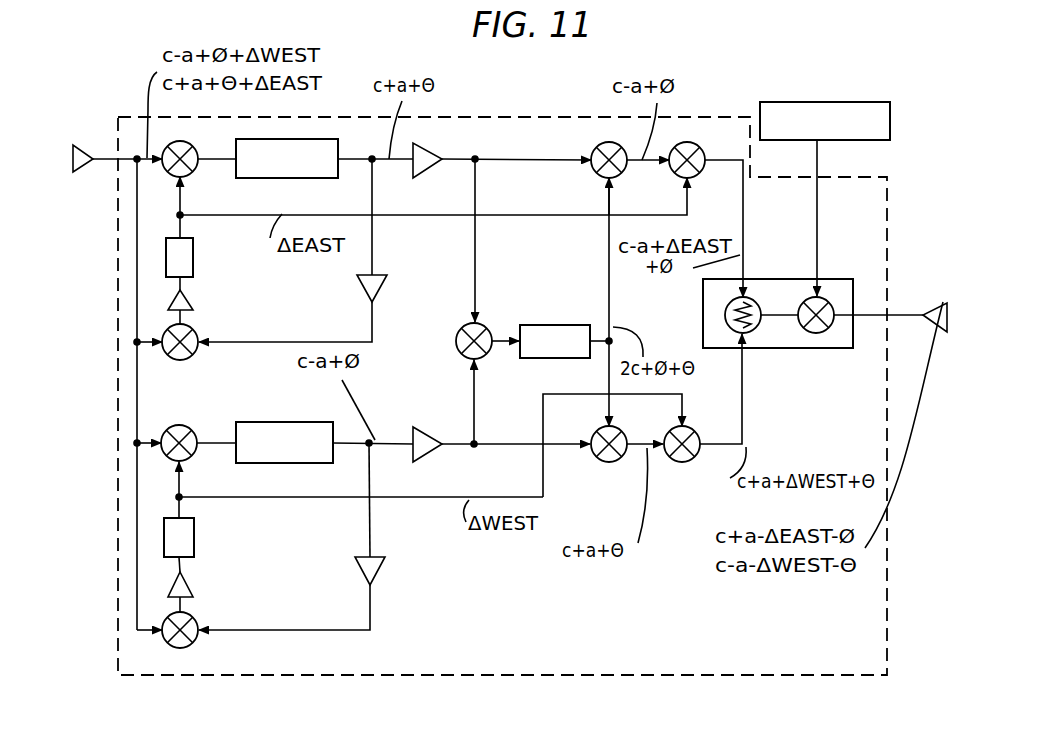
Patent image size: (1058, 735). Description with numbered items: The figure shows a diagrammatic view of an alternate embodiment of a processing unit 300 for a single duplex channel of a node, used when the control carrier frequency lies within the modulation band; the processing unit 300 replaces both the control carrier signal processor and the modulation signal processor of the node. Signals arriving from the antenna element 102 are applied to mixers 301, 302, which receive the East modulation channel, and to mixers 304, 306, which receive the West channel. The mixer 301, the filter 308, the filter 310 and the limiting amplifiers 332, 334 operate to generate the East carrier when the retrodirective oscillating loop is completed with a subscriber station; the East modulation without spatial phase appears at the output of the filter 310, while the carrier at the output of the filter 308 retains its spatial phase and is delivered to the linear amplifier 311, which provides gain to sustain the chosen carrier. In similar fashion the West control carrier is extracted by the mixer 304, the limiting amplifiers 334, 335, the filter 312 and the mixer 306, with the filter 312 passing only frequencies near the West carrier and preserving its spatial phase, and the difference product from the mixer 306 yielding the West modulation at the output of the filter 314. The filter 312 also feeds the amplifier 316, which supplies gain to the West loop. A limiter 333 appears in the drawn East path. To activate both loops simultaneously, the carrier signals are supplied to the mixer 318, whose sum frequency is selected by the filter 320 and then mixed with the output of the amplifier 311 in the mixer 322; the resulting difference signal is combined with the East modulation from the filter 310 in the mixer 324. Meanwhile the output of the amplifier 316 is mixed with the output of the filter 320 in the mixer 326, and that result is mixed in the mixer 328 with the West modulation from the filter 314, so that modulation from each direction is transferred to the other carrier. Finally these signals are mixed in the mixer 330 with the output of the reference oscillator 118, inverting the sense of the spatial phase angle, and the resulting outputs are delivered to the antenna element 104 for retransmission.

The antenna element 102 is at (90, 147).
The antenna element 104 is at (937, 298).
The reference oscillator 118 is at (890, 124).
The processing unit 300 is at (888, 245).
The mixer 301 is at (187, 144).
The mixer 302 is at (185, 363).
The mixer 304 is at (200, 420).
The mixer 306 is at (197, 642).
The filter 308 is at (335, 180).
The filter 310 is at (193, 257).
The linear amplifier 311 is at (439, 165).
The filter 312 is at (317, 421).
The filter 314 is at (194, 535).
The amplifier 316 is at (430, 427).
The mixer 318 is at (460, 345).
The filter 320 is at (580, 315).
The mixer 322 is at (598, 144).
The mixer 324 is at (699, 151).
The mixer 326 is at (605, 465).
The mixer 328 is at (680, 463).
The mixer 330 is at (818, 333).
The limiting amplifier 332 is at (185, 300).
The limiter 333 is at (386, 290).
The limiting amplifier 334 is at (192, 587).
The limiting amplifier 335 is at (355, 567).